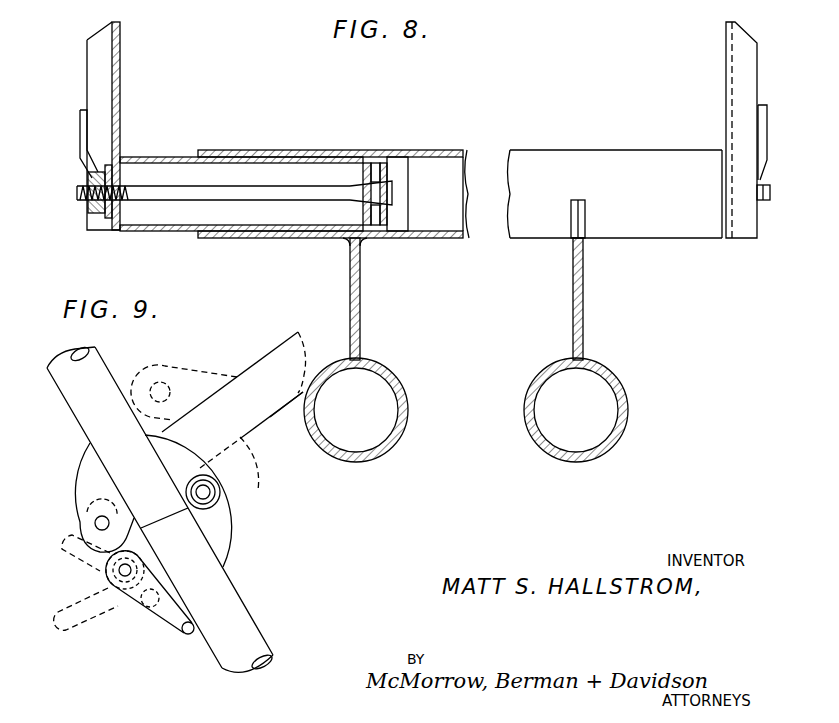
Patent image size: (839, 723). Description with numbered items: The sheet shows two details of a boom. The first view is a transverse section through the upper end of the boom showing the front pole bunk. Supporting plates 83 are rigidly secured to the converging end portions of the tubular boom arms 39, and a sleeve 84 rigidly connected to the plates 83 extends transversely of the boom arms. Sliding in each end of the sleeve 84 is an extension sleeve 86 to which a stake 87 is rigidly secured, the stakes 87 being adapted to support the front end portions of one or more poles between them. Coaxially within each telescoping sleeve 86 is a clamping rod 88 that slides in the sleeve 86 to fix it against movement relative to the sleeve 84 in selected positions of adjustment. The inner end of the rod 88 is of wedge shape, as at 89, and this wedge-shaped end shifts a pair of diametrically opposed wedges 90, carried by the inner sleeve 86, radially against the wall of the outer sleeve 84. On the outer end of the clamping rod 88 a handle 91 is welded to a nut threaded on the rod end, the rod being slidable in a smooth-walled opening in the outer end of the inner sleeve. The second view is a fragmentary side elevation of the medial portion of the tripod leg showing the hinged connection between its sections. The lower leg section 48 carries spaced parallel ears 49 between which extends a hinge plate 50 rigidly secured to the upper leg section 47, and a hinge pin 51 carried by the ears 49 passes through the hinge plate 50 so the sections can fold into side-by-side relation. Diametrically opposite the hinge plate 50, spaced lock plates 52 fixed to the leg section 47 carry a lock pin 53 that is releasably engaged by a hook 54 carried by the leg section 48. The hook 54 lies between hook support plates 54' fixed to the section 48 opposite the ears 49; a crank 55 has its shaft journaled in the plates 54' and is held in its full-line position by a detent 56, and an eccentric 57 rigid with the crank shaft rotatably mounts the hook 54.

In FIG. 8, the boom arm 39 is at (525, 413).
In FIG. 9, the upper boom leg section 47 is at (262, 341).
In FIG. 9, the lower leg section 48 is at (235, 599).
In FIG. 9, the ears 49 is at (234, 527).
In FIG. 9, the hinge plate 50 is at (256, 412).
In FIG. 9, the hinge pin 51 is at (222, 492).
In FIG. 9, the lock plates 52 is at (84, 479).
In FIG. 9, the lock pin 53 is at (86, 519).
In FIG. 9, the hook 54 is at (64, 564).
In FIG. 9, the hook support plates 54' is at (86, 617).
In FIG. 9, the crank 55 is at (170, 618).
In FIG. 9, the detent 56 is at (145, 607).
In FIG. 9, the eccentric 57 is at (152, 566).
In FIG. 8, the supporting plates 83 is at (362, 311).
In FIG. 8, the sleeve 84 is at (478, 144).
In FIG. 8, the extension sleeve 86 is at (151, 158).
In FIG. 8, the stake 87 is at (118, 70).
In FIG. 8, the clamping rod 88 is at (226, 191).
In FIG. 8, the wedge-shaped inner end 89 is at (393, 210).
In FIG. 8, the wedges 90 is at (376, 166).
In FIG. 8, the handle 91 is at (78, 142).